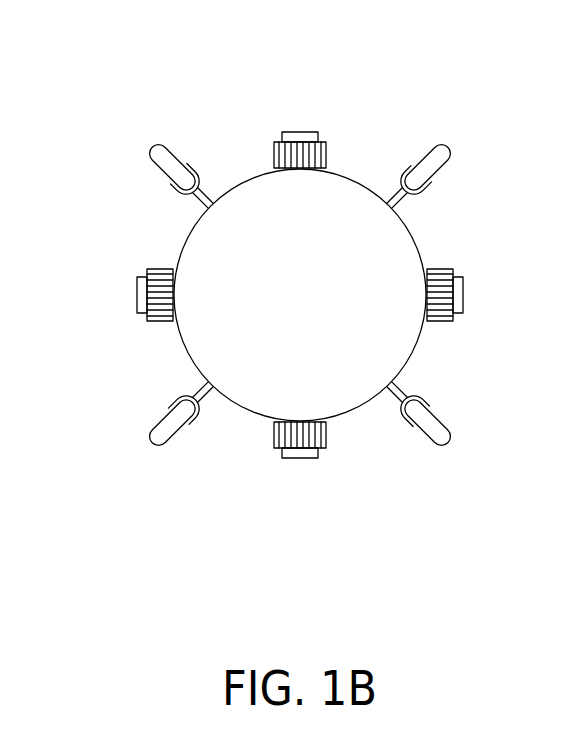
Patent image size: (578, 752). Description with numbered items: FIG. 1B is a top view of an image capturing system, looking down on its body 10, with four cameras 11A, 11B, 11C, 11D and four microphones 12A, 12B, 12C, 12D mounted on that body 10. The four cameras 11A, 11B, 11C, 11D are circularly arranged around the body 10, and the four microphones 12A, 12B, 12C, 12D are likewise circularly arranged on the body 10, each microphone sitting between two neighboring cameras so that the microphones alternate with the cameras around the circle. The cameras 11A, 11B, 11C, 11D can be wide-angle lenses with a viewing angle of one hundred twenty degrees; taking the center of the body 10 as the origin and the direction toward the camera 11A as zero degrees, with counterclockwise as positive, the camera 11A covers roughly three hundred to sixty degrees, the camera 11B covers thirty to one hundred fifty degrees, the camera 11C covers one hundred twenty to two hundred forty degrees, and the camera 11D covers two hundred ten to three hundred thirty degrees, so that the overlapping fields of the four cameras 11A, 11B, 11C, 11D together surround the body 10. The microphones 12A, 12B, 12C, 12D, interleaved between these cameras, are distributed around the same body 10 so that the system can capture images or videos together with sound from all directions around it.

The body 10 is at (416, 240).
The camera 11A is at (463, 292).
The camera 11B is at (299, 131).
The camera 11C is at (137, 295).
The camera 11D is at (300, 459).
The microphone 12A is at (450, 148).
The microphone 12B is at (155, 152).
The microphone 12C is at (157, 438).
The microphone 12D is at (445, 442).